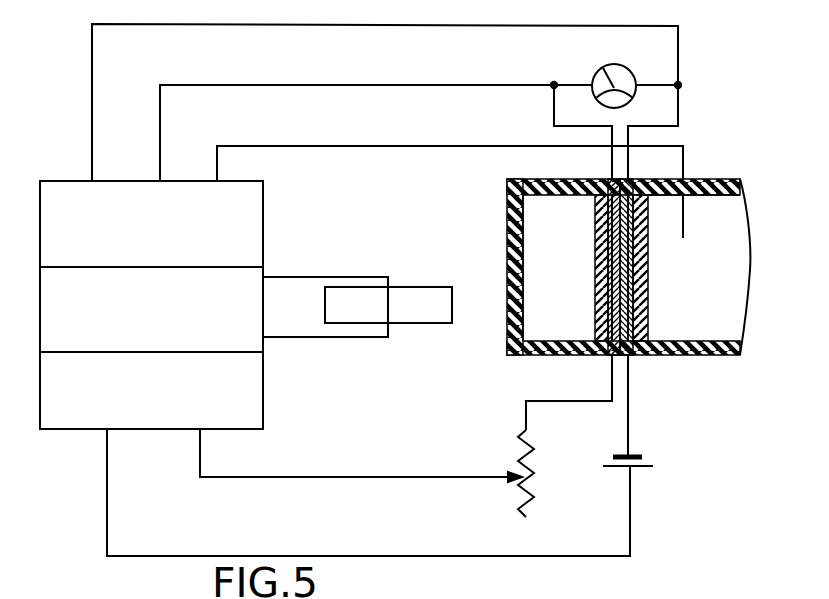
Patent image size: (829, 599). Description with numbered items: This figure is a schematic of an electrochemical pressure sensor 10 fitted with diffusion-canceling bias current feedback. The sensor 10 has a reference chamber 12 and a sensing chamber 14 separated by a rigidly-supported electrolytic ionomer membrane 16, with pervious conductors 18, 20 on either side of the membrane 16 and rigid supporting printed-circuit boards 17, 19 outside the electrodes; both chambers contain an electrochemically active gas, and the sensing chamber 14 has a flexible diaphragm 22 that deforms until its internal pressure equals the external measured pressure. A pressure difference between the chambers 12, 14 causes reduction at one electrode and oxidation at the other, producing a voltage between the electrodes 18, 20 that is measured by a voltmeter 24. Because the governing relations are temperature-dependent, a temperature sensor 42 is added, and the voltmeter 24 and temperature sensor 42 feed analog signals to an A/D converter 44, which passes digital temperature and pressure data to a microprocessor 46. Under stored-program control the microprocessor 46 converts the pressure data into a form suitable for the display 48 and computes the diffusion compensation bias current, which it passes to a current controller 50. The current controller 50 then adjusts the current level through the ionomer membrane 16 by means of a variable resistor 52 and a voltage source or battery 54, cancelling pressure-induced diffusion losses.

The pressure sensor 10 is at (651, 273).
The reference chamber 12 is at (572, 288).
The sensing chamber 14 is at (677, 288).
The electrolytic membrane 16 is at (614, 357).
The rigid supporting printed-circuit board 17 is at (599, 228).
The pervious conductor 18 is at (606, 293).
The rigid supporting printed-circuit board 19 is at (645, 243).
The pervious conductor 20 is at (632, 303).
The flexible diaphragm 22 is at (750, 250).
The voltmeter 24 is at (597, 70).
The temperature sensor 42 is at (685, 213).
The A/D converter 44 is at (265, 211).
The microprocessor 46 is at (40, 300).
The display 48 is at (412, 287).
The current controller 50 is at (263, 370).
The variable resistor 52 is at (520, 455).
The voltage source (battery) 54 is at (636, 468).